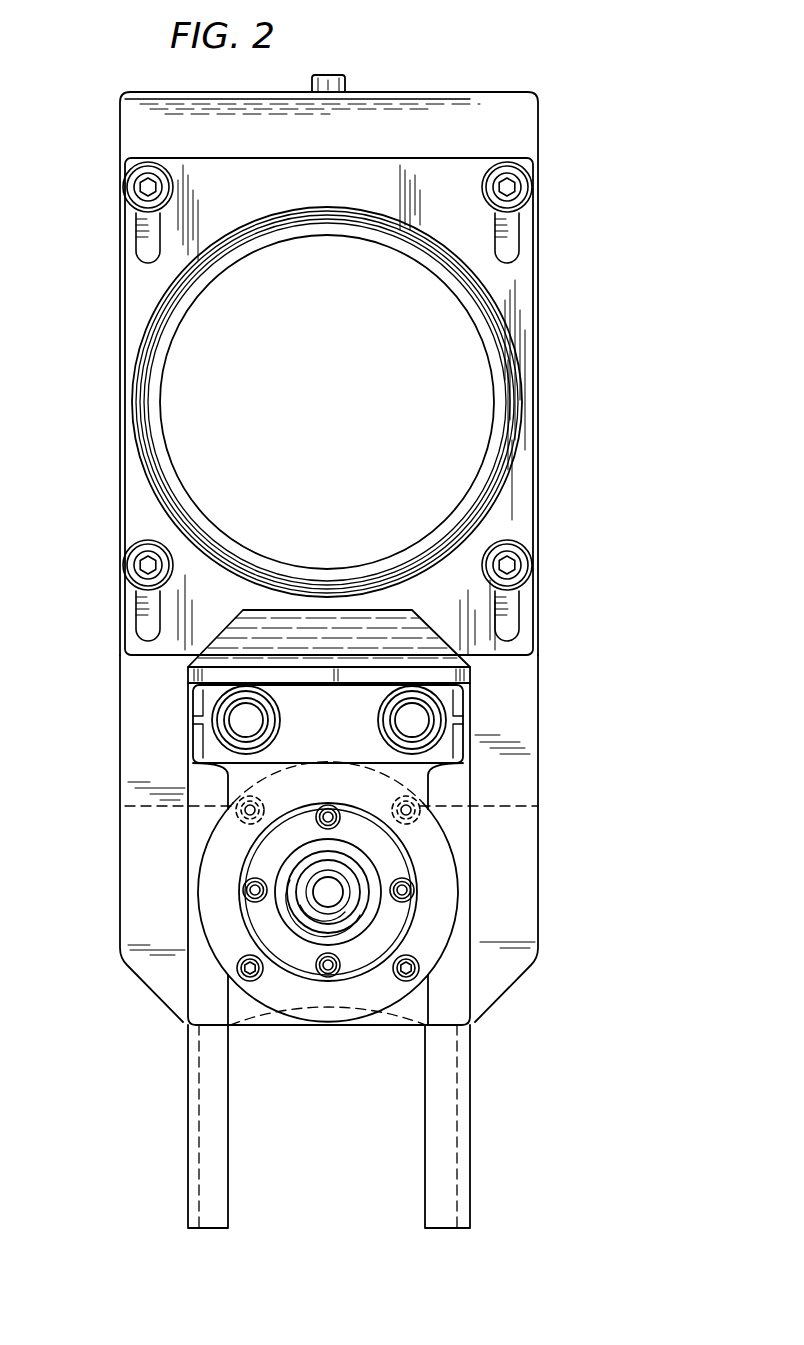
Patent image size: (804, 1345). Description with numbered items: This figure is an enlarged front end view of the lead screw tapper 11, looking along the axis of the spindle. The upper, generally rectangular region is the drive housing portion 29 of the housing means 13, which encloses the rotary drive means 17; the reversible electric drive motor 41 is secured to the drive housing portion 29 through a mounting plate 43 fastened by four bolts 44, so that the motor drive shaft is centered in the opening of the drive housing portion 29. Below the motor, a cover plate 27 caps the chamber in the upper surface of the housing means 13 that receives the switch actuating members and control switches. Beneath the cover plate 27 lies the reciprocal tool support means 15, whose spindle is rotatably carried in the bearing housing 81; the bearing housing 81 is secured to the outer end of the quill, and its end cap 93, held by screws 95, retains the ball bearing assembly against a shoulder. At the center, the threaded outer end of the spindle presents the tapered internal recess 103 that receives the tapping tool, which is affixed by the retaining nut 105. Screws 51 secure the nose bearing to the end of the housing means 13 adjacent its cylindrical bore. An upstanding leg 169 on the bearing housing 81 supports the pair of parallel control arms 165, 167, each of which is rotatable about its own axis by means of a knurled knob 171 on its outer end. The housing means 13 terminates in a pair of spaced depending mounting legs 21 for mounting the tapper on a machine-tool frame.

The lead screw tapper 11 is at (634, 118).
The housing means 13 is at (476, 1098).
The reciprocal tool support means 15 is at (447, 782).
The rotary drive means 17 is at (516, 305).
The mounting legs 21 is at (210, 1218).
The cover plate 27 is at (125, 652).
The drive housing portion 29 is at (135, 135).
The reversible electric drive motor 41 is at (498, 378).
The mounting plate 43 is at (527, 498).
The bolts 44 is at (137, 197).
The screws 51 is at (125, 806).
The bearing housing 81 is at (412, 848).
The end cap 93 is at (306, 962).
The screws 95 is at (398, 880).
The tapered internal recess 103 is at (340, 912).
The retaining nut 105 is at (292, 912).
The control arm 165 is at (415, 720).
The control arm 167 is at (238, 718).
The upstanding leg 169 is at (200, 742).
The knurled knob 171 is at (218, 748).